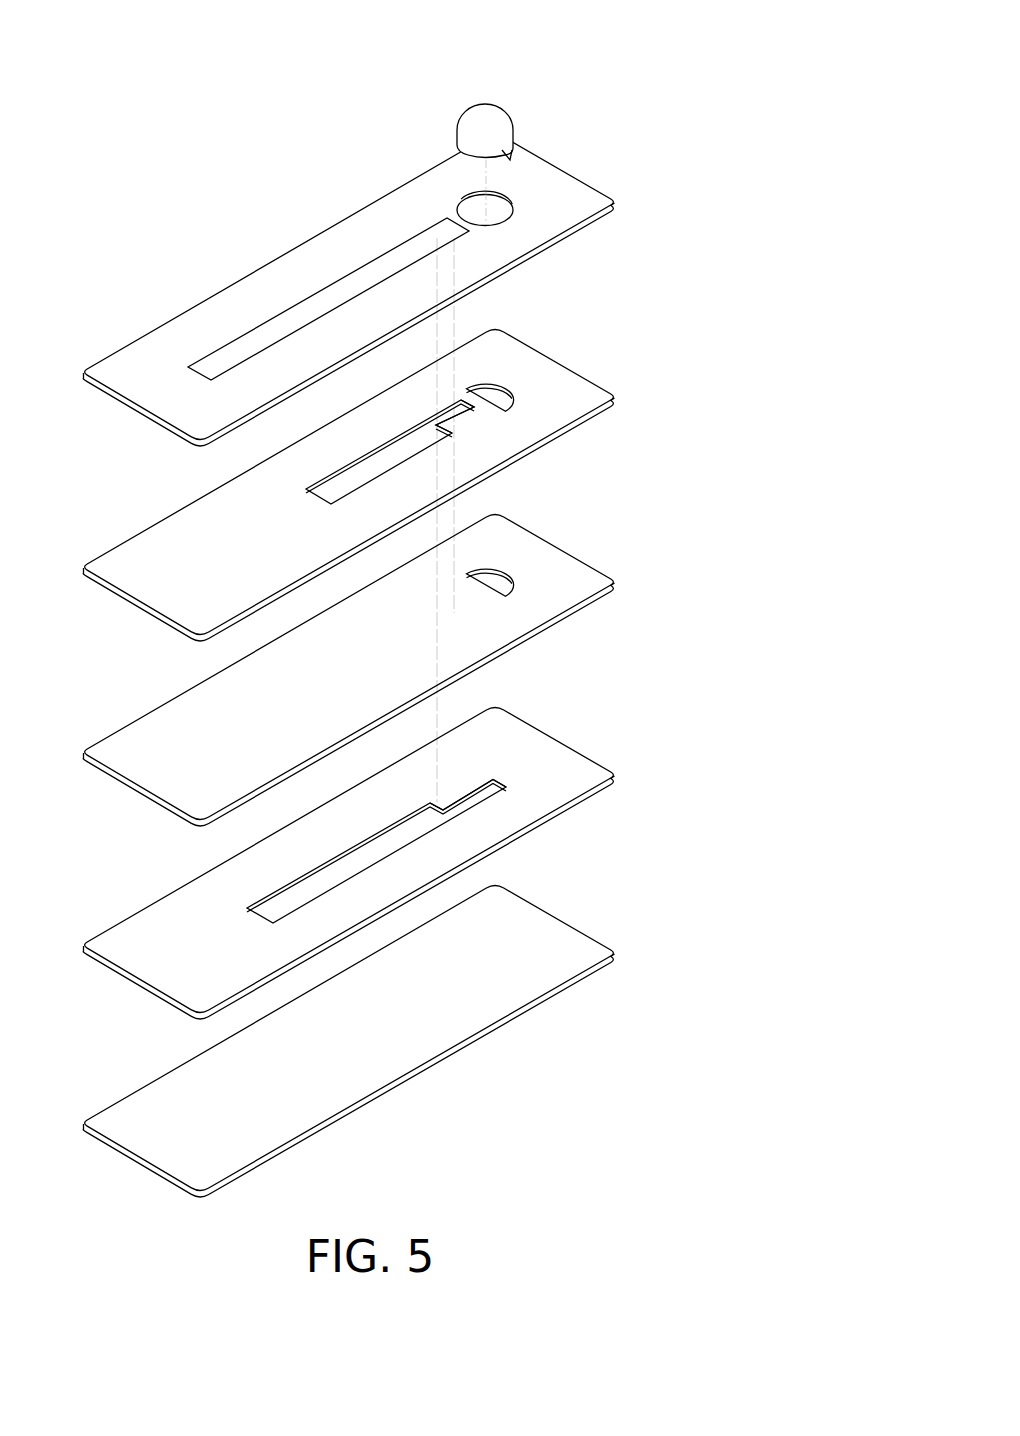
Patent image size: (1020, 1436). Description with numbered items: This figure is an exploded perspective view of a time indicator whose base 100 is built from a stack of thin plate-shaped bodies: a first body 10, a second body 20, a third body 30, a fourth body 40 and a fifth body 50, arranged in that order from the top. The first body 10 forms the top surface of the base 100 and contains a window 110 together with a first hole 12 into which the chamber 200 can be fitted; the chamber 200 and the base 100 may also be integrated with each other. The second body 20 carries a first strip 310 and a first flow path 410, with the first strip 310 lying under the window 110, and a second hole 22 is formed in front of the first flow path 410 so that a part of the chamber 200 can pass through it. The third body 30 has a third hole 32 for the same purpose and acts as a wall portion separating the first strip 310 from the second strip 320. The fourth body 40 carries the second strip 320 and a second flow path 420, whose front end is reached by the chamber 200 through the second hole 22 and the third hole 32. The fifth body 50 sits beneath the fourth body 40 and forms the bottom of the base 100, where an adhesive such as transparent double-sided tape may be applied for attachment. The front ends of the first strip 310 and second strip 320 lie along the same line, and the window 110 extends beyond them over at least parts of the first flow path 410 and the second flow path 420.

The first body 10 is at (580, 183).
The first hole 12 is at (472, 212).
The second body 20 is at (585, 381).
The second hole 22 is at (496, 386).
The third body 30 is at (600, 575).
The third hole 32 is at (498, 576).
The fourth body 40 is at (590, 762).
The fifth body 50 is at (603, 948).
The base 100 is at (335, 196).
The window 110 is at (283, 322).
The chamber 200 is at (512, 104).
The first strip 310 is at (332, 491).
The second strip 320 is at (272, 906).
The first flow path 410 is at (470, 412).
The second flow path 420 is at (491, 786).